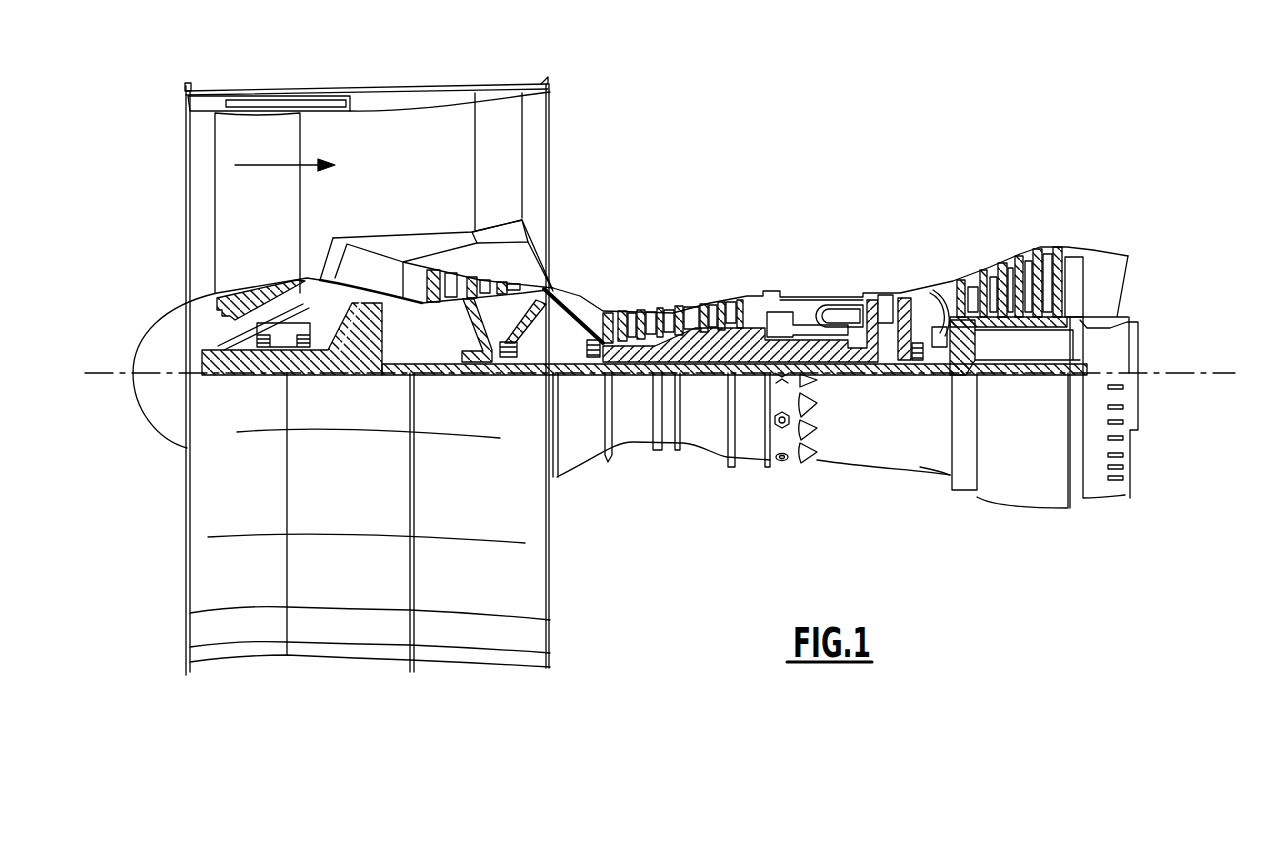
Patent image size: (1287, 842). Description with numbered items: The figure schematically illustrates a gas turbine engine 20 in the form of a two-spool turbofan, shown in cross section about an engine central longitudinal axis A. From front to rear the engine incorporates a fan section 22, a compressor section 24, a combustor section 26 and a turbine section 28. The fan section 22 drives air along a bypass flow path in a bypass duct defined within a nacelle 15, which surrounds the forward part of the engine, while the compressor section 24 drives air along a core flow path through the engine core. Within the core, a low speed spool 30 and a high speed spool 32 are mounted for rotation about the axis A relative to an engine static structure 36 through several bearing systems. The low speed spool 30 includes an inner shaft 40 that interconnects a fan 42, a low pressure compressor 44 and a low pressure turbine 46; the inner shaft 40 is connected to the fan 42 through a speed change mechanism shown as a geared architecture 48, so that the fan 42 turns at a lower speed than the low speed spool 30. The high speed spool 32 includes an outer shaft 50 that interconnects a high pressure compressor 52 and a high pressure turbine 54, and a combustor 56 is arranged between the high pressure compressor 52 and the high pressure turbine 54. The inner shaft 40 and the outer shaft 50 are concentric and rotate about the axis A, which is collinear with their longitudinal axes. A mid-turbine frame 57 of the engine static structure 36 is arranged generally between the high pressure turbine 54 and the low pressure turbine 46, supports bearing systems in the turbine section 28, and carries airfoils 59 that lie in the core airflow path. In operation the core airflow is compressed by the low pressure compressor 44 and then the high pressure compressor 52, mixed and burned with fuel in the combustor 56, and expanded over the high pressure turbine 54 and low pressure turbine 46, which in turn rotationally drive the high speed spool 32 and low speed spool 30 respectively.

The nacelle 15 is at (370, 92).
The gas turbine engine 20 is at (669, 344).
The fan section 22 is at (341, 344).
The compressor section 24 is at (528, 320).
The combustor section 26 is at (842, 283).
The turbine section 28 is at (1025, 338).
The low speed spool 30 is at (707, 376).
The high speed spool 32 is at (752, 310).
The engine static structure 36 is at (748, 461).
The inner shaft 40 is at (568, 375).
The fan 42 is at (273, 218).
The low pressure compressor 44 is at (470, 282).
The low pressure turbine 46 is at (1013, 267).
The geared architecture 48 is at (373, 356).
The outer shaft 50 is at (836, 373).
The high pressure compressor 52 is at (682, 343).
The high pressure turbine 54 is at (888, 292).
The combustor 56 is at (822, 313).
The mid-turbine frame 57 is at (930, 282).
The airfoils 59 is at (950, 322).
The engine central longitudinal axis A is at (1218, 373).